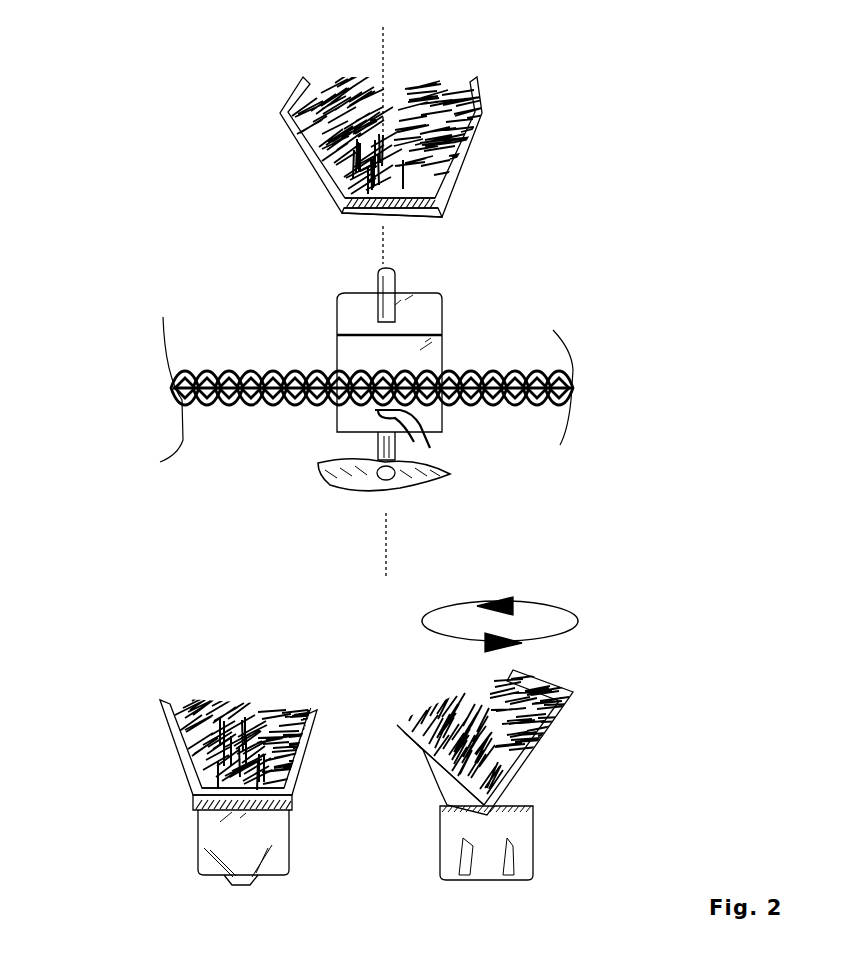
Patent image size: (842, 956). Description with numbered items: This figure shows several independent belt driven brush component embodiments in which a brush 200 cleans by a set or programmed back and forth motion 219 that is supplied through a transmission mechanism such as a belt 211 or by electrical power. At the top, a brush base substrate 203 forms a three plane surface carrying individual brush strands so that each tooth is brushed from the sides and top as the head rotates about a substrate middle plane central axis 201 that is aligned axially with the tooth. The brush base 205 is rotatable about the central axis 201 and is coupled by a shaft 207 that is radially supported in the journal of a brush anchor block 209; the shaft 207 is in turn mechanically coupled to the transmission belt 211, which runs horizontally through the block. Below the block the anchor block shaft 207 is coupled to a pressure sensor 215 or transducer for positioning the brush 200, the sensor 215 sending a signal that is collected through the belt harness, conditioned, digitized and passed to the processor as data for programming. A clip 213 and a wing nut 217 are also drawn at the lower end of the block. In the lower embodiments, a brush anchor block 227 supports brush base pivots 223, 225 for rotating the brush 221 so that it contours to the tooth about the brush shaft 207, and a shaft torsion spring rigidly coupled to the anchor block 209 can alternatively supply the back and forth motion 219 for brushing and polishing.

The brush 200 is at (630, 137).
The central axis 201 is at (383, 50).
The brush base substrate 203 is at (305, 152).
The brush base 205 is at (342, 218).
The shaft 207 is at (410, 283).
The brush anchor block 209 is at (365, 311).
The transmission belt 211 is at (505, 365).
The clip 213 is at (370, 413).
The pressure sensor 215 is at (430, 440).
The wing nut 217 is at (448, 476).
The back and forth motion 219 is at (578, 621).
The brush 221 is at (557, 752).
The brush base pivot 223 is at (507, 852).
The brush base pivot 225 is at (213, 865).
The brush anchor block 227 is at (232, 827).